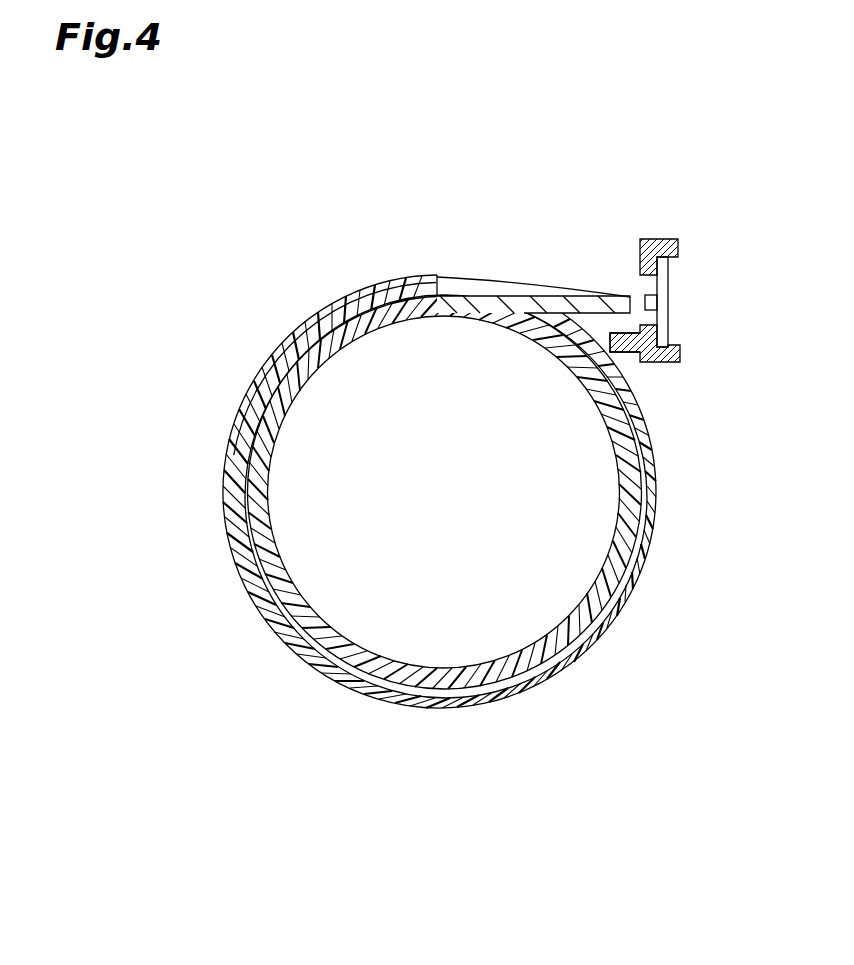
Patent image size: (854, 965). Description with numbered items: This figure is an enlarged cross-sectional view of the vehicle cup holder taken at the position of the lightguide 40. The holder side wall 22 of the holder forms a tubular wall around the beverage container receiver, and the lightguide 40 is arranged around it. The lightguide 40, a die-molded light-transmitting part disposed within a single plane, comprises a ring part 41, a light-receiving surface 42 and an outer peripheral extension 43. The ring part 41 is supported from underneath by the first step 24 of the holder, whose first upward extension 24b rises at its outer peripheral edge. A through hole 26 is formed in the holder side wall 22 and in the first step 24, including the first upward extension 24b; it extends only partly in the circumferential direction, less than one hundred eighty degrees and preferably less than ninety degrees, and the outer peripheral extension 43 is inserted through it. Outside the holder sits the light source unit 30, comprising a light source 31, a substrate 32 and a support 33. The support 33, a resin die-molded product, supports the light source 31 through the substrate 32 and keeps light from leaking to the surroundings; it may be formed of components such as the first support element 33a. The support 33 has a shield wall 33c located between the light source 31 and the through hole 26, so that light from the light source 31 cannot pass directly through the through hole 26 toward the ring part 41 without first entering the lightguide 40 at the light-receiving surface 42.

The holder side wall 22 is at (556, 671).
The first step 24 is at (622, 591).
The first upward extension 24b is at (649, 486).
The through hole 26 is at (437, 281).
The light source unit 30 is at (676, 304).
The light source 31 is at (647, 295).
The substrate 32 is at (671, 271).
The support 33 is at (674, 240).
The first support element 33a is at (656, 239).
The shield wall 33c is at (642, 353).
The lightguide 40 is at (256, 430).
The ring part 41 is at (308, 326).
The light-receiving surface 42 is at (632, 296).
The outer peripheral extension 43 is at (560, 296).